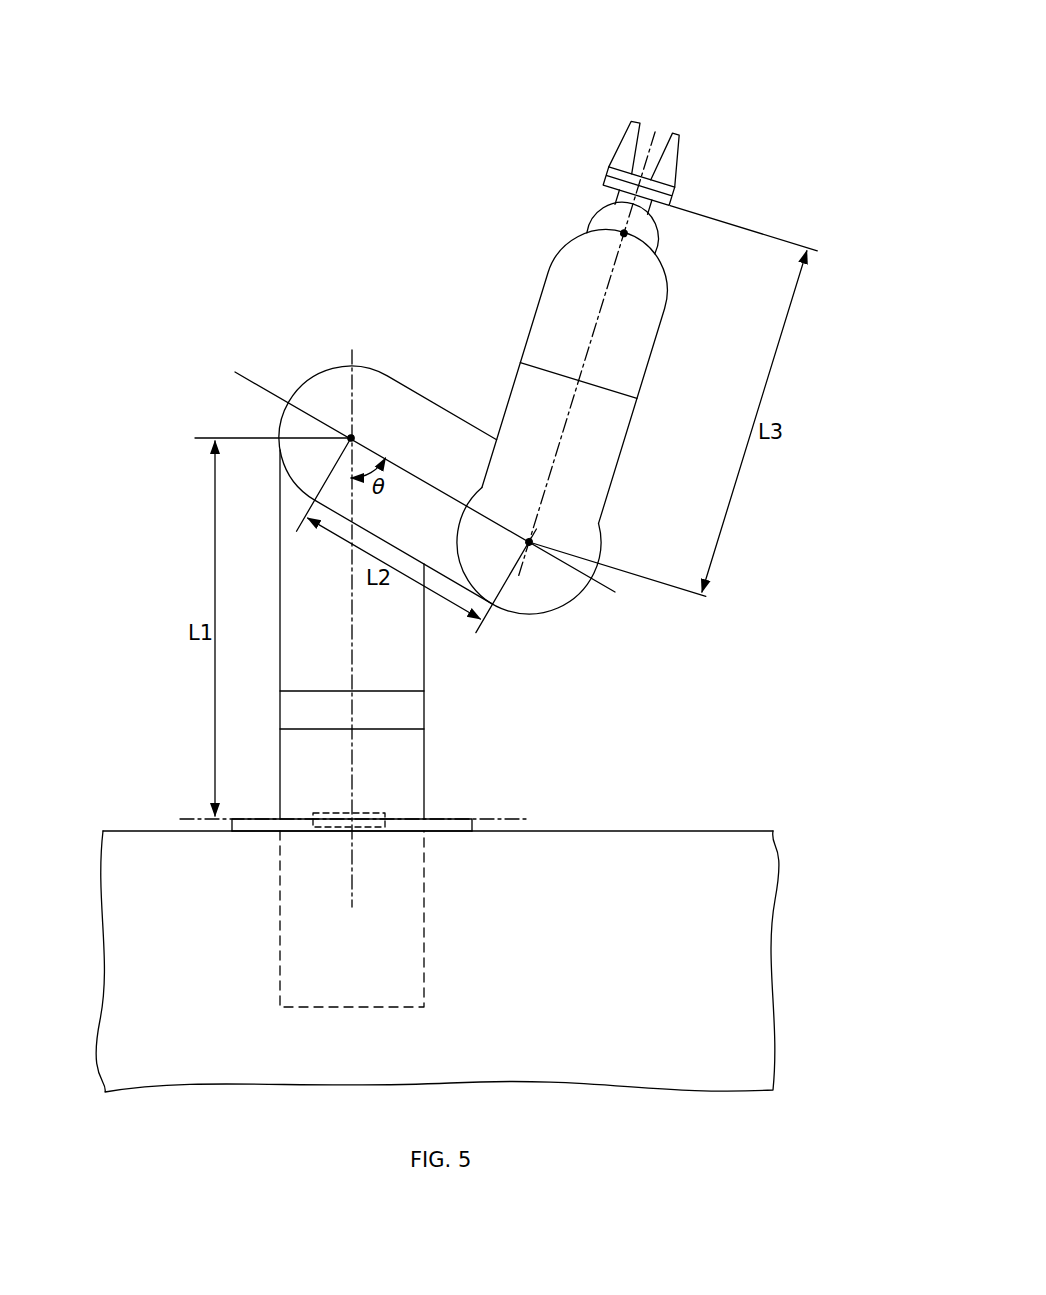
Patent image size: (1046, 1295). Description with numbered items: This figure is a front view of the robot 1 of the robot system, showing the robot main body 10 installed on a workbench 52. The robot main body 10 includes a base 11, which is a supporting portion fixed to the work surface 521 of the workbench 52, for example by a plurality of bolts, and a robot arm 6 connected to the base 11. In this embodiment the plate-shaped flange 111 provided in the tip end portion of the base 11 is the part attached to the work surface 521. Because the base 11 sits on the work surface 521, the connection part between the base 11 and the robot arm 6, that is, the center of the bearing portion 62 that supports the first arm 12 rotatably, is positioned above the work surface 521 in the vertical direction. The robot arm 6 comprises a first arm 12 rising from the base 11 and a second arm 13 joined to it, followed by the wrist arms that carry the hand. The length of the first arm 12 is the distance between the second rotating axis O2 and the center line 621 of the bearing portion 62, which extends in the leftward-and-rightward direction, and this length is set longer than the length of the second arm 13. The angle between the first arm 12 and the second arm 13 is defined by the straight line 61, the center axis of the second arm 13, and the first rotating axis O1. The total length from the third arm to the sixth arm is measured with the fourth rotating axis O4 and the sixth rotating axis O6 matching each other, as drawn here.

The robot 1 is at (741, 81).
The robot main body 10 is at (766, 131).
The base 11 is at (453, 816).
The plate-shaped flange 111 is at (456, 834).
The first arm 12 is at (431, 703).
The second arm 13 is at (431, 392).
The robot arm 6 is at (431, 657).
The straight line 61 is at (246, 371).
The bearing portion 62 is at (322, 828).
The center line 621 is at (206, 818).
The workbench 52 is at (745, 933).
The work surface 521 is at (703, 830).
The first rotating axis O1 is at (345, 660).
The second rotating axis O2 is at (350, 436).
The fourth rotating axis O4 is at (565, 430).
The sixth rotating axis O6 is at (657, 208).